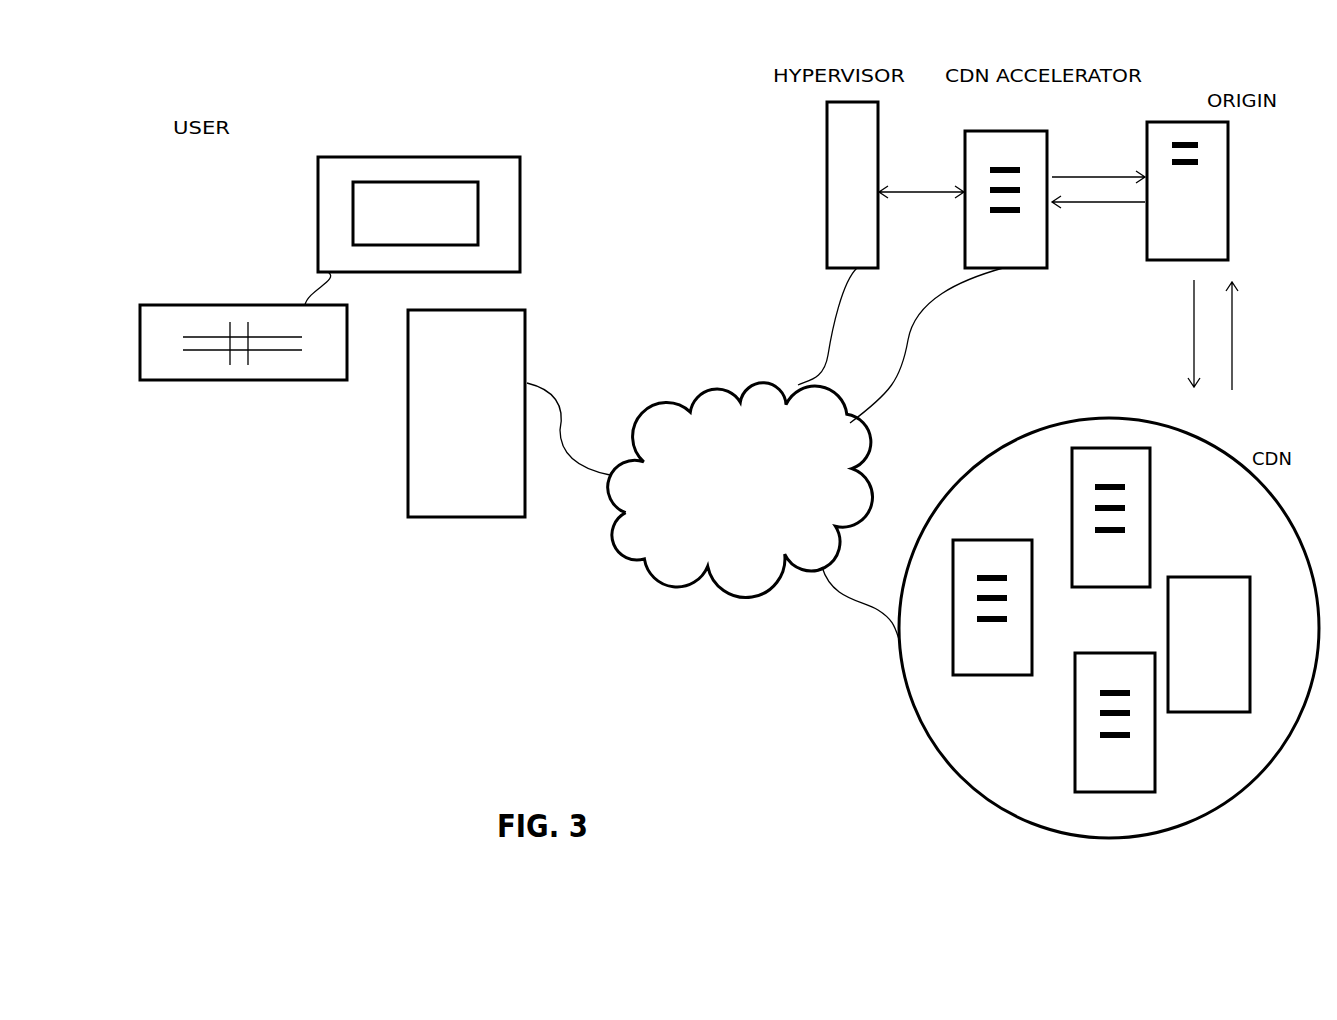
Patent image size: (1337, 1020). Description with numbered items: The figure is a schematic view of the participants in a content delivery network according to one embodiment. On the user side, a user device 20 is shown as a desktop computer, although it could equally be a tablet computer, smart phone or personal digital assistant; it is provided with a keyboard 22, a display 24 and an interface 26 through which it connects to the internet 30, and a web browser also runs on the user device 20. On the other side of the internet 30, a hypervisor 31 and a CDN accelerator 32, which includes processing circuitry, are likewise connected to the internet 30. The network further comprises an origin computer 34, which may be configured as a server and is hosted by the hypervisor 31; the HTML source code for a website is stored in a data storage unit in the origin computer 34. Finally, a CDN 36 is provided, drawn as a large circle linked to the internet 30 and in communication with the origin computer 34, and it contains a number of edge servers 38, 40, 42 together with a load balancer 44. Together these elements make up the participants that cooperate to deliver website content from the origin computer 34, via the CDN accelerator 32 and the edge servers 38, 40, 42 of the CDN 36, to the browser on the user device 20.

The user device 20 is at (198, 418).
The keyboard 22 is at (140, 333).
The display 24 is at (353, 213).
The interface 26 is at (410, 448).
The internet 30 is at (697, 402).
The hypervisor 31 is at (827, 173).
The CDN accelerator 32 is at (962, 178).
The origin computer 34 is at (1230, 197).
The CDN 36 is at (932, 750).
The edge server 38 is at (1068, 528).
The edge server 40 is at (1003, 677).
The edge server 42 is at (1070, 737).
The load balancer 44 is at (1230, 572).